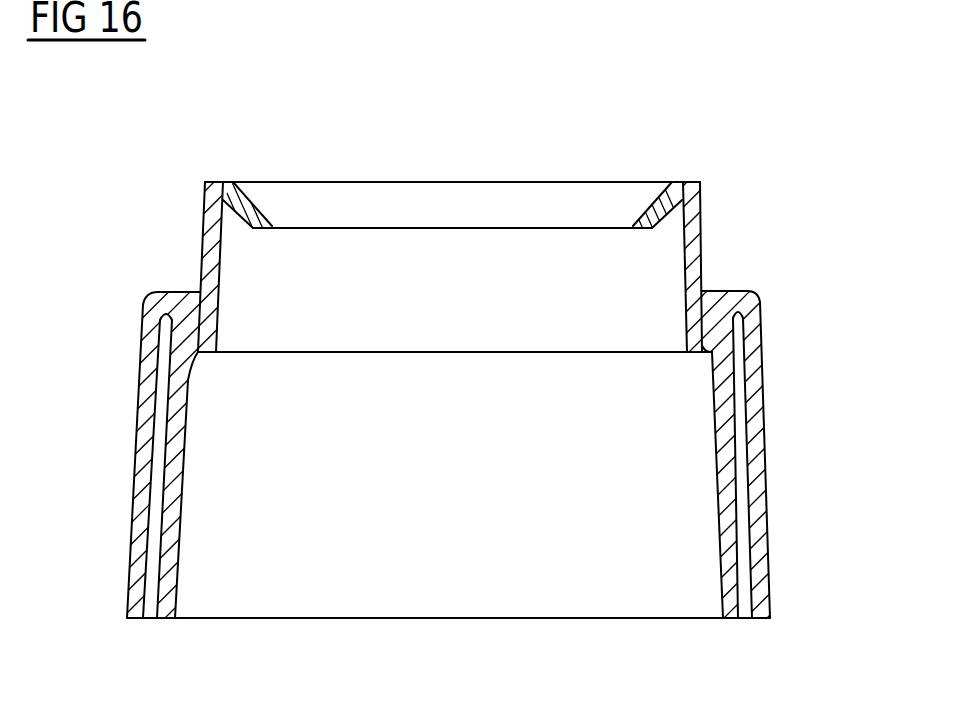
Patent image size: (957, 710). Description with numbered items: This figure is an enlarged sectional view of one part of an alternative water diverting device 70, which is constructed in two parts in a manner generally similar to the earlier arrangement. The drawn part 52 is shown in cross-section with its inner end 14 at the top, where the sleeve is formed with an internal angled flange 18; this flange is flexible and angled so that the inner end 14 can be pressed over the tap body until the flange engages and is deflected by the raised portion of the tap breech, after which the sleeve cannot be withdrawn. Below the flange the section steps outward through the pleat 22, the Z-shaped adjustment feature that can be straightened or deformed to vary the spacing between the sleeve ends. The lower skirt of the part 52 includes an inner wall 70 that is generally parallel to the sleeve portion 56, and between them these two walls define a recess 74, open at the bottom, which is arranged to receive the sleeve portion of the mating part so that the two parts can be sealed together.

The inner end 14 is at (478, 355).
The internal angled flange 18 is at (343, 205).
The inner wall 70 is at (478, 355).
The part 52 is at (103, 310).
The pleat 22 is at (198, 366).
The sleeve portion 56 is at (135, 481).
The recess 74 is at (148, 620).